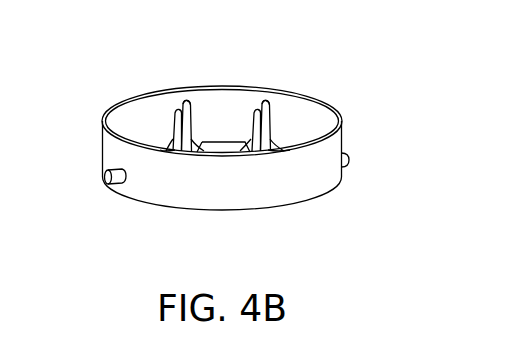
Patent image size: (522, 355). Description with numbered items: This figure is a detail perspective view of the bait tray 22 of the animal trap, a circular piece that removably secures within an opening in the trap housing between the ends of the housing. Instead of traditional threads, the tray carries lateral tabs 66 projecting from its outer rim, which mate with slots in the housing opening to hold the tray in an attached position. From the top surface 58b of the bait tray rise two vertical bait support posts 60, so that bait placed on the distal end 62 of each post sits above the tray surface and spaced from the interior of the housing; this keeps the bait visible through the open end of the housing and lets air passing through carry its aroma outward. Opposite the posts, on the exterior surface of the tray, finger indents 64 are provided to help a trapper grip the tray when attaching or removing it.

The bait tray 22 is at (103, 89).
The top surface of the bait tray 58b is at (218, 148).
The vertical bait support posts 60 is at (268, 131).
The distal end of the post 62 is at (268, 104).
The finger indents 64 is at (280, 152).
The lateral tabs 66 is at (103, 178).